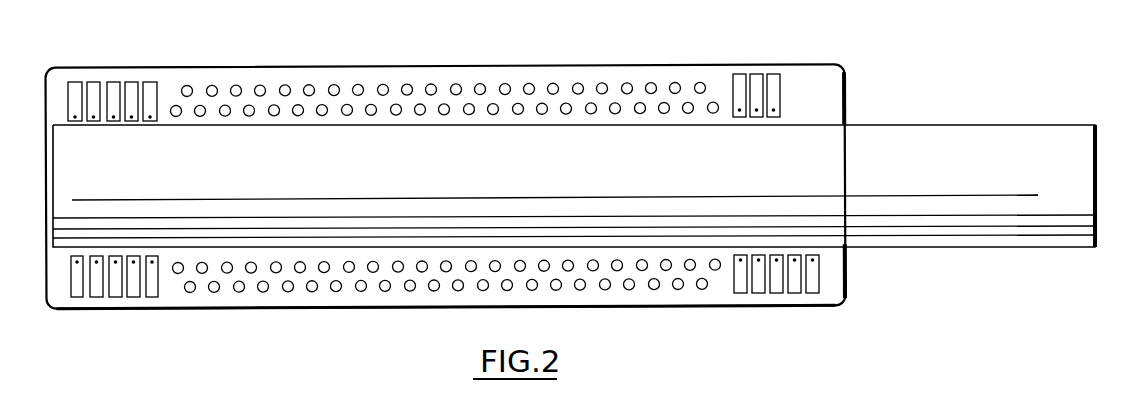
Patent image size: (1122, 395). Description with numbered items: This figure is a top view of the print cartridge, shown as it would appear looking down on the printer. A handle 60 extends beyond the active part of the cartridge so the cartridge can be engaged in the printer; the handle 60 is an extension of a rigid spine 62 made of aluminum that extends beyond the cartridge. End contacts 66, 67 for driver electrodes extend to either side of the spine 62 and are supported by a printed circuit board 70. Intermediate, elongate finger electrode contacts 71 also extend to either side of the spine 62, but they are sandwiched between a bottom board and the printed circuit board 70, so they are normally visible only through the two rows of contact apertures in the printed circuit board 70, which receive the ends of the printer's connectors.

The handle 60 is at (958, 136).
The rigid spine 62 is at (806, 137).
The end contact 66 is at (149, 82).
The end contact 67 is at (445, 303).
The printed circuit board 70 is at (314, 72).
The finger electrode contact 71 is at (504, 84).